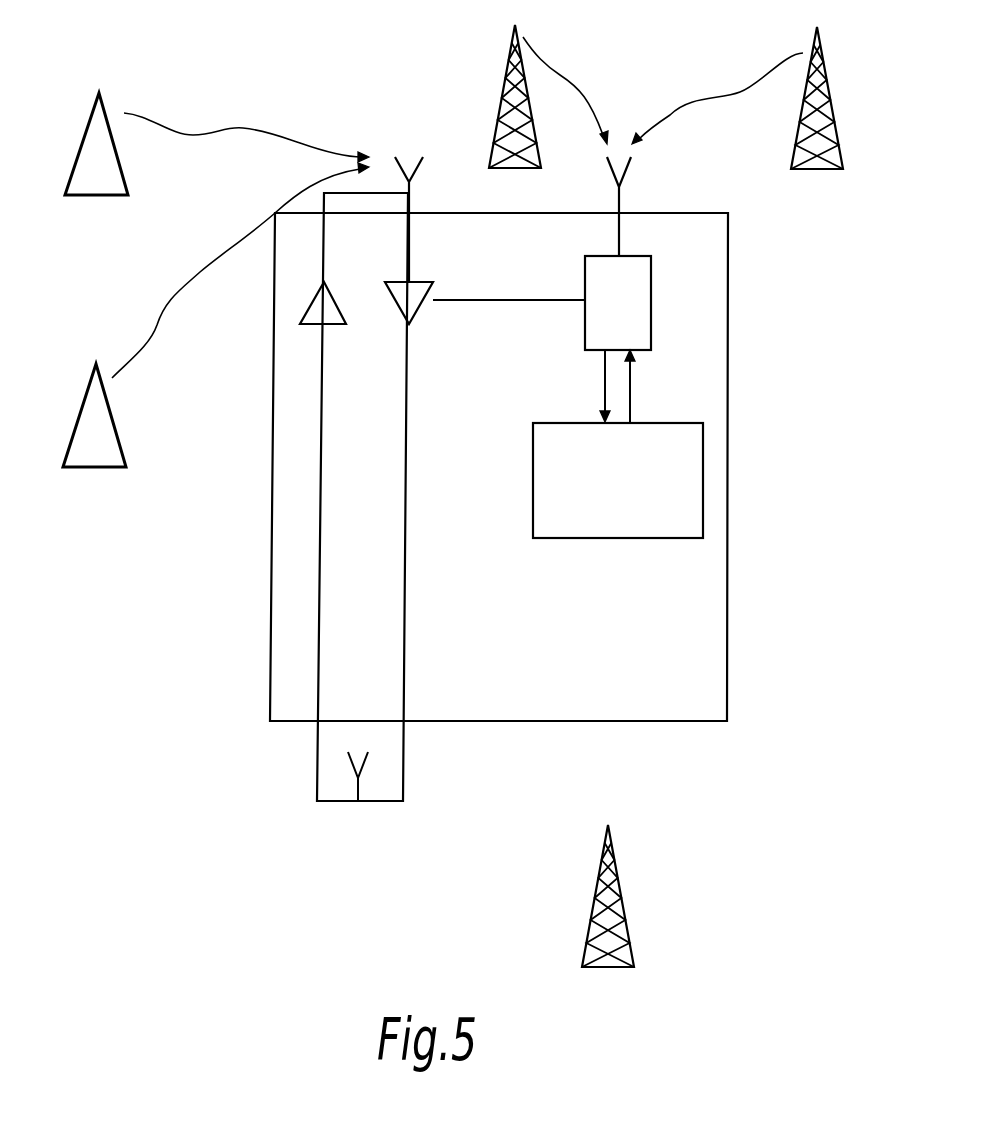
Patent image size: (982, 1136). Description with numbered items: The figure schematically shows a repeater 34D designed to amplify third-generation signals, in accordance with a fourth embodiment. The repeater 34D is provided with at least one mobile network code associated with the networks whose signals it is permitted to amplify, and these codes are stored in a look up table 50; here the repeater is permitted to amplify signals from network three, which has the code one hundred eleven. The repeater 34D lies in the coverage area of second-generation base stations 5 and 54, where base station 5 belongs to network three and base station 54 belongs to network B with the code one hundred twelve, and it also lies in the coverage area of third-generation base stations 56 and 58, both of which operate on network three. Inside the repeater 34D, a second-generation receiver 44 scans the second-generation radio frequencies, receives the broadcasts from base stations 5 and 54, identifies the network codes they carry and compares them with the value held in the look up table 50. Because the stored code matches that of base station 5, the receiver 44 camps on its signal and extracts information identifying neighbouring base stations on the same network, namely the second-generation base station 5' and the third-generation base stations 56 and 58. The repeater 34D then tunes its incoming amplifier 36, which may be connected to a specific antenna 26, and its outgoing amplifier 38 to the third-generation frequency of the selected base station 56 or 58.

The 2G base station 5 is at (750, 98).
The neighbour 2G base station 5' is at (619, 895).
The 3G antenna 26 is at (412, 183).
The 3G repeater 34D is at (728, 410).
The incoming 3G amplifier 36 is at (425, 282).
The outgoing amplifier 38 is at (327, 292).
The 2G receiver 44 is at (653, 307).
The look up table 50 is at (679, 422).
The 2G base station 54 is at (510, 55).
The 3G base station 56 is at (87, 113).
The 3G base station 58 is at (80, 405).